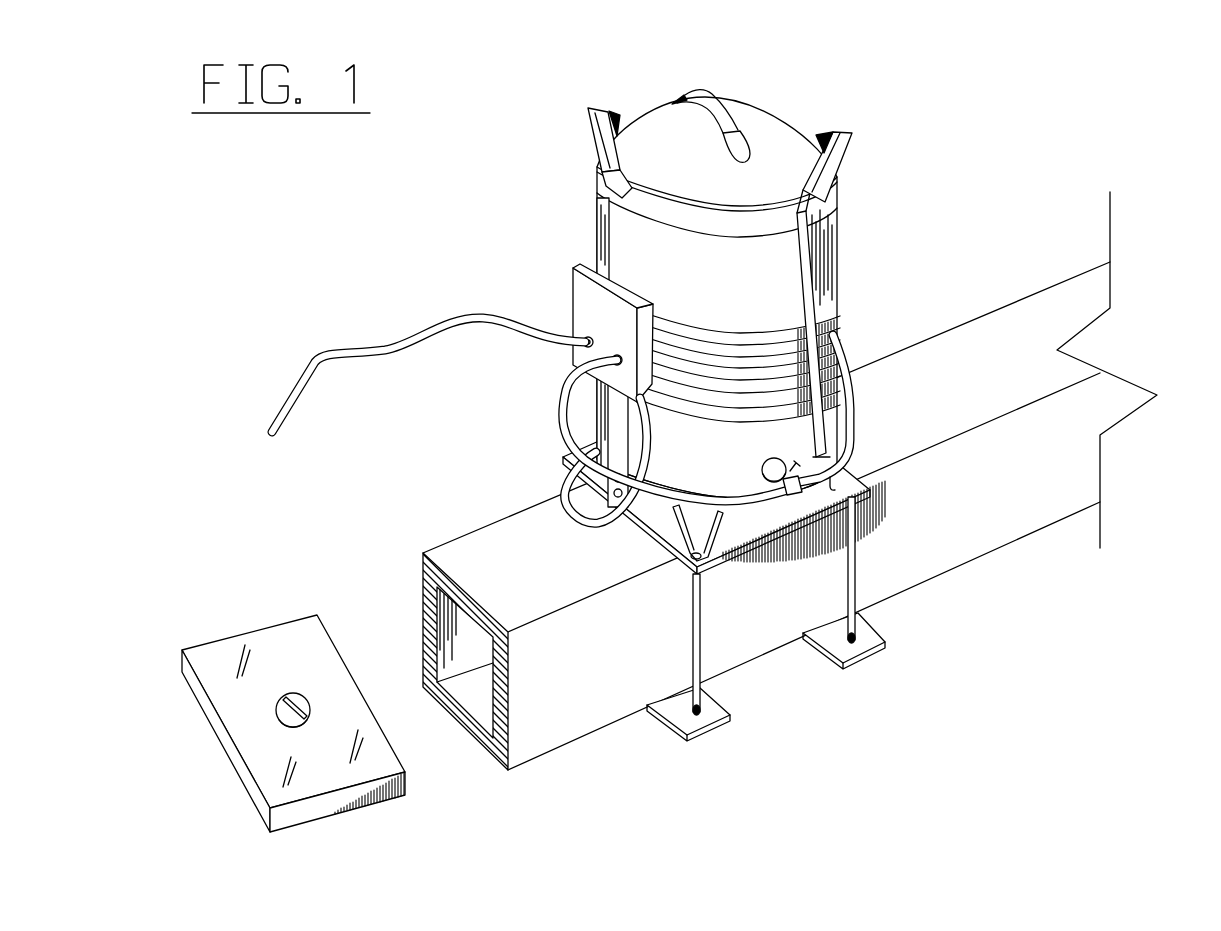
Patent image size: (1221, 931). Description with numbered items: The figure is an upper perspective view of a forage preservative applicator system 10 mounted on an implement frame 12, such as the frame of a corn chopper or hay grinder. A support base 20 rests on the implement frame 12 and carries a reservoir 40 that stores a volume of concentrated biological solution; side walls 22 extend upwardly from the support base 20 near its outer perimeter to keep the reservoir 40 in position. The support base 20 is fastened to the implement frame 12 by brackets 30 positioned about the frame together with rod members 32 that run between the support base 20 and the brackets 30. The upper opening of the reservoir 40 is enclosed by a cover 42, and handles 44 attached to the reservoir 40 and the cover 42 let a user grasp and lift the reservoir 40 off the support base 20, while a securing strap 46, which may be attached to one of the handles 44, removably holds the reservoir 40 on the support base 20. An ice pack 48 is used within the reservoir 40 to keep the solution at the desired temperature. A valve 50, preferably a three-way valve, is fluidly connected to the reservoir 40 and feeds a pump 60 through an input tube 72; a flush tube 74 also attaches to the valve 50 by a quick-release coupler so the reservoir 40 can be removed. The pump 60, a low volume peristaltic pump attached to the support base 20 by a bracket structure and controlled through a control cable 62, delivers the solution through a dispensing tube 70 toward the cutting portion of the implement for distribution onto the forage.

The forage preservative applicator system 10 is at (1062, 125).
The implement frame 12 is at (1010, 334).
The support base 20 is at (720, 572).
The side walls 22 is at (757, 525).
The brackets 30 is at (712, 713).
The rod members 32 is at (647, 705).
The reservoir 40 is at (838, 223).
The cover 42 is at (767, 122).
The handles 44 is at (688, 95).
The securing strap 46 is at (838, 277).
The ice pack 48 is at (283, 643).
The valve 50 is at (845, 472).
The pump 60 is at (590, 302).
The control cable 62 is at (577, 500).
The dispensing tube 70 is at (395, 352).
The input tube 72 is at (563, 403).
The flush tube 74 is at (853, 430).